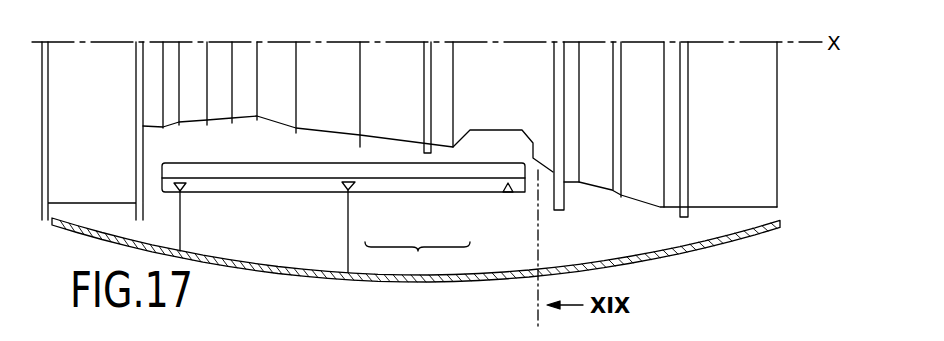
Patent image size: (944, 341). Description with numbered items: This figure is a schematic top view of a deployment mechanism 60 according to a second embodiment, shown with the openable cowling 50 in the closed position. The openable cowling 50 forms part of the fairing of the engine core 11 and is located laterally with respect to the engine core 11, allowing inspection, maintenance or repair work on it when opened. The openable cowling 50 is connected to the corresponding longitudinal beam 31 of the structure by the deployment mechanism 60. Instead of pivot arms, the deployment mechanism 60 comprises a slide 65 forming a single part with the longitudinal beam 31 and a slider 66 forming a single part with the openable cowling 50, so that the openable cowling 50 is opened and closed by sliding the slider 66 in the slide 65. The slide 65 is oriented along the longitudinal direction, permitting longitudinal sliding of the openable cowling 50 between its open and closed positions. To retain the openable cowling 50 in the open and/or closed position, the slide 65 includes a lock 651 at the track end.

The engine core 11 is at (498, 57).
The longitudinal beam 31 is at (282, 193).
The openable cowling 50 is at (416, 250).
The deployment mechanism 60 is at (418, 251).
The slide 65 is at (444, 186).
The slider 66 is at (355, 187).
The lock 651 is at (185, 186).